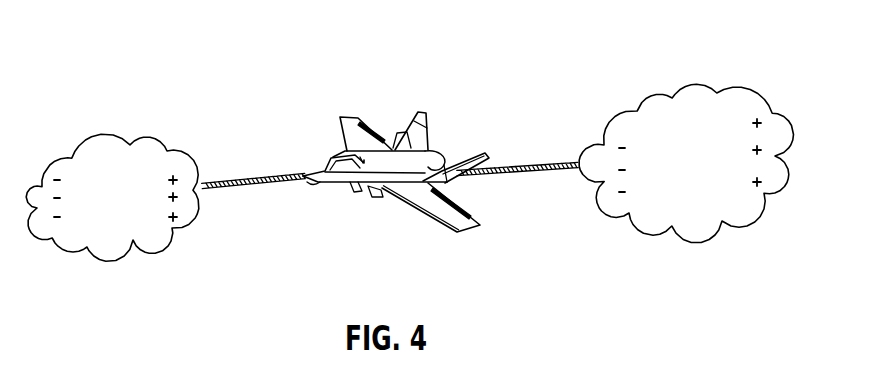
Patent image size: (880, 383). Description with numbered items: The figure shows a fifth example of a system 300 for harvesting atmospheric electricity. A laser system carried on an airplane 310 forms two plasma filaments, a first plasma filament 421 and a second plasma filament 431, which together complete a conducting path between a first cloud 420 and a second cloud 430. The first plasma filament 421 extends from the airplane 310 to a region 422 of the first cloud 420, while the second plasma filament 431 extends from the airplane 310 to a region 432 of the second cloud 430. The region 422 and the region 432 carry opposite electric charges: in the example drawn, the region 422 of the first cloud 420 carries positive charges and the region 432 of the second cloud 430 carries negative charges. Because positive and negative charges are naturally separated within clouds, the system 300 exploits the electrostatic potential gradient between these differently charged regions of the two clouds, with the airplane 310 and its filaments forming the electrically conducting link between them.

The system for harvesting atmospheric electricity 300 is at (363, 52).
The airplane 310 is at (338, 181).
The first cloud 420 is at (97, 189).
The first plasma filament 421 is at (260, 172).
The region of the first cloud 422 is at (166, 154).
The second cloud 430 is at (667, 161).
The second plasma filament 431 is at (538, 165).
The region of the second cloud 432 is at (615, 127).